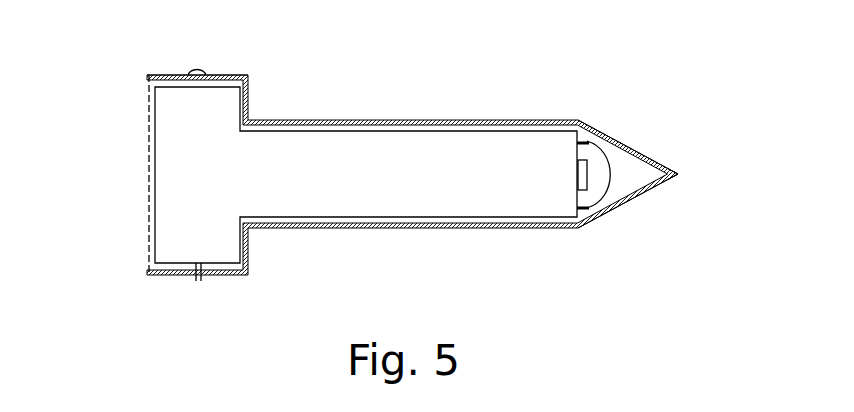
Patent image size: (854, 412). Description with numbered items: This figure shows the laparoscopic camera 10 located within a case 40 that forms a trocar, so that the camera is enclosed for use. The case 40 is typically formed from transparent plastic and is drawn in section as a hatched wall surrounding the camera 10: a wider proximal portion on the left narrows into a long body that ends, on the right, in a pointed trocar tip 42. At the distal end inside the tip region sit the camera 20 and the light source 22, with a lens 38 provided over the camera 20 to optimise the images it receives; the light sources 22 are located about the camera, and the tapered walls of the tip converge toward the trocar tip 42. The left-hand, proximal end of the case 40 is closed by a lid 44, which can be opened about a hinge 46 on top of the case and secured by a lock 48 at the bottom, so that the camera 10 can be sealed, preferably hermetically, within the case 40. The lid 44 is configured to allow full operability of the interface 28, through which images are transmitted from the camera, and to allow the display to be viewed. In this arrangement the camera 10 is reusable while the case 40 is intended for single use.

The laparoscopic camera 10 is at (203, 192).
The camera 20 is at (588, 178).
The light source 22 is at (591, 140).
The interface 28 is at (106, 115).
The lens 38 is at (607, 162).
The case 40 is at (430, 120).
The trocar tip 42 is at (678, 174).
The lid 44 is at (155, 73).
The hinge 46 is at (199, 72).
The lock 48 is at (193, 279).